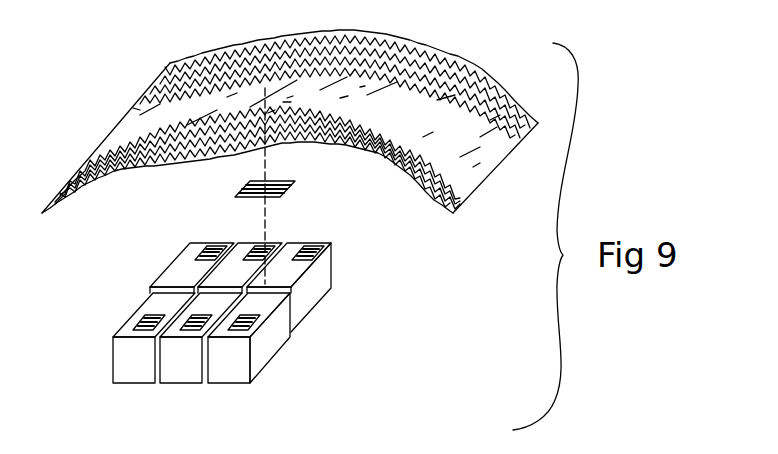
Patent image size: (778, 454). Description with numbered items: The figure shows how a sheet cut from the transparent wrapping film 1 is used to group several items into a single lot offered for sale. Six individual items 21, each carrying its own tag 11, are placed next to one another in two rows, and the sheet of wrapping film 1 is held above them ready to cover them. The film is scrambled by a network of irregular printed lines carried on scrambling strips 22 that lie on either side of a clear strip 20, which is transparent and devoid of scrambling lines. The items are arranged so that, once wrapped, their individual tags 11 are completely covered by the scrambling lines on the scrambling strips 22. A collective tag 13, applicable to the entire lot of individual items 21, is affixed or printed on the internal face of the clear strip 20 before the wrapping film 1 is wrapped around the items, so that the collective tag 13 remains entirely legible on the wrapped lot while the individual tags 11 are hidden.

The transparent wrapping film 1 is at (469, 55).
The clear strip 20 is at (443, 131).
The scrambling strips 22 is at (460, 110).
The collective tag 13 is at (276, 182).
The individual items 21 is at (181, 275).
The tag 11 is at (234, 328).